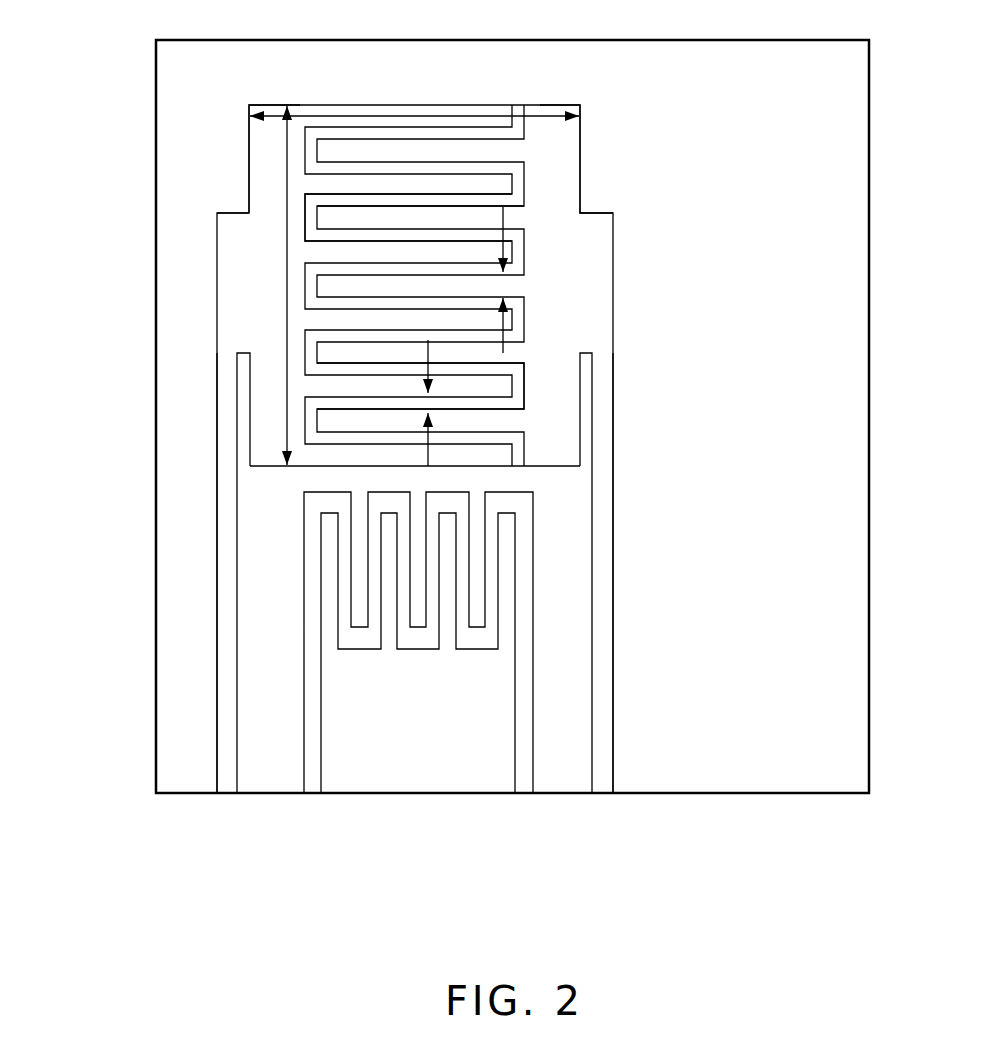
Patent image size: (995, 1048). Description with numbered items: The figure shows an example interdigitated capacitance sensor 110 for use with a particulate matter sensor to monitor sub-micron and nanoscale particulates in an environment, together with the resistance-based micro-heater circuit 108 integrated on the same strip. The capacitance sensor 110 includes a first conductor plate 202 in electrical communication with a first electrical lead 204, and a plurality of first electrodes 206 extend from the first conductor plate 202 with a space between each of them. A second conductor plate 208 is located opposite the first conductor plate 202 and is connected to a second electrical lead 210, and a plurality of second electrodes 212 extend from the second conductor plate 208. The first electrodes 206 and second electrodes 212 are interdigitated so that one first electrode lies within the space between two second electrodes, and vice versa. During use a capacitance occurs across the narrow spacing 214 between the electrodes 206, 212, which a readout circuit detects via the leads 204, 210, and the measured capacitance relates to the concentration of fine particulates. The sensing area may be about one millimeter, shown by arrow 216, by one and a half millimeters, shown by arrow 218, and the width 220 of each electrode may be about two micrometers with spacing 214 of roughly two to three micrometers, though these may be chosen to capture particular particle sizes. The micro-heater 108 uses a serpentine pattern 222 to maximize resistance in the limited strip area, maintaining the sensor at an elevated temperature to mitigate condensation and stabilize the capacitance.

The micro-heater circuit 108 is at (676, 686).
The interdigitated capacitance sensor 110 is at (603, 114).
The first conductor plate 202 is at (237, 232).
The first electrical lead 204 is at (227, 488).
The first electrodes 206 is at (338, 316).
The second conductor plate 208 is at (573, 184).
The second electrical lead 210 is at (604, 498).
The second electrodes 212 is at (513, 213).
The spacing between the electrodes 214 is at (446, 403).
The sensing area width arrow 216 is at (453, 112).
The sensing area length arrow 218 is at (287, 193).
The width of the electrodes 220 is at (526, 284).
The serpentine pattern 222 is at (570, 563).